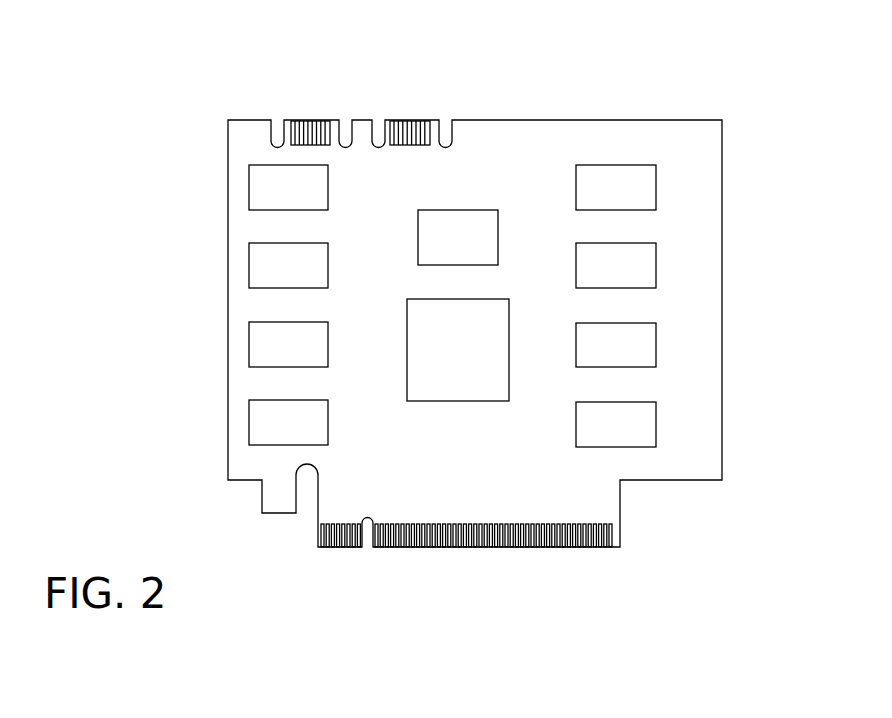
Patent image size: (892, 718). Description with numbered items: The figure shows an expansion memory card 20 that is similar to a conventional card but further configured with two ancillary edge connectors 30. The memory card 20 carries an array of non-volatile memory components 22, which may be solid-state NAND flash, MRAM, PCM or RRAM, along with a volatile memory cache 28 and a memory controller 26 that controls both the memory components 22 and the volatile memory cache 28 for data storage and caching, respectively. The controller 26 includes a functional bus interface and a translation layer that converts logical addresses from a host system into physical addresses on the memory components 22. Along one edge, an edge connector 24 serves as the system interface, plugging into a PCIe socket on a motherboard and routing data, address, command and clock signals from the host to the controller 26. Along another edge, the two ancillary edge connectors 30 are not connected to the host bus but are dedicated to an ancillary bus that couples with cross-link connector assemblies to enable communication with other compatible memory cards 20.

The memory card 20 is at (230, 104).
The non-volatile memory components 22 is at (274, 196).
The edge connector 24 is at (610, 562).
The memory controller 26 is at (438, 367).
The volatile memory cache 28 is at (443, 244).
The ancillary edge connectors 30 is at (320, 90).